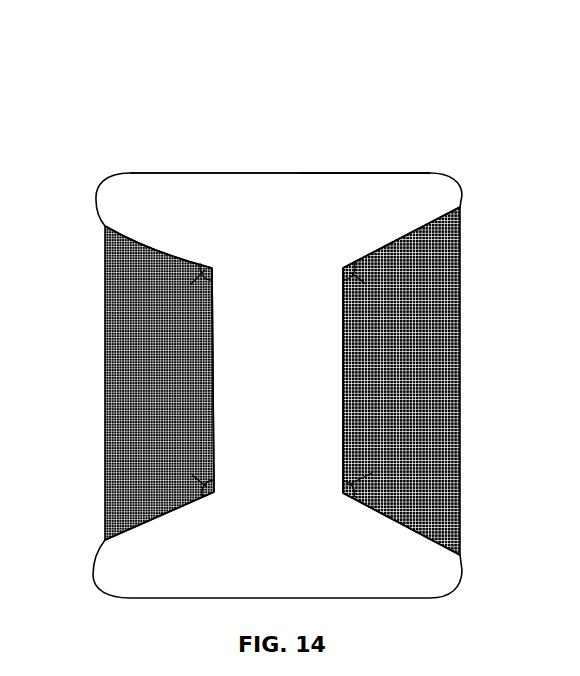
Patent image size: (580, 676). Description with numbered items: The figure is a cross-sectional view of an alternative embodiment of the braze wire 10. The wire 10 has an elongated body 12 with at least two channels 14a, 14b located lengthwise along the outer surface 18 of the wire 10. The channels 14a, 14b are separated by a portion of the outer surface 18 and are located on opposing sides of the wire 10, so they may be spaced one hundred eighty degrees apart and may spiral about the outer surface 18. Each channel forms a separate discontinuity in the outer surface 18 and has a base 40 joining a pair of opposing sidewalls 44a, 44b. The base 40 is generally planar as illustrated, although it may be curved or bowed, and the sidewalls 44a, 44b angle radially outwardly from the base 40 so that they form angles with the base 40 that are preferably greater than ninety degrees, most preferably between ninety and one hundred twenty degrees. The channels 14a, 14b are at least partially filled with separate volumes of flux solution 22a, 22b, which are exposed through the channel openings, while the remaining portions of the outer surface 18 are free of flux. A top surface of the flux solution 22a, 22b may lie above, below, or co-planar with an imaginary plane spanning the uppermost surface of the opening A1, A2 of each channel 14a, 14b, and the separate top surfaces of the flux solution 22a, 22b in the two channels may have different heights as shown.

The wire 10 is at (80, 110).
The elongated body 12 is at (281, 172).
The outer surface 18 is at (412, 172).
The channel 14a is at (153, 360).
The channel 14b is at (423, 365).
The flux solution 22a is at (107, 448).
The flux solution 22b is at (443, 435).
The sidewall 44a is at (152, 243).
The sidewall 44b is at (148, 519).
The base 40 is at (277, 380).
The opening A1 is at (28, 191).
The opening A2 is at (520, 191).